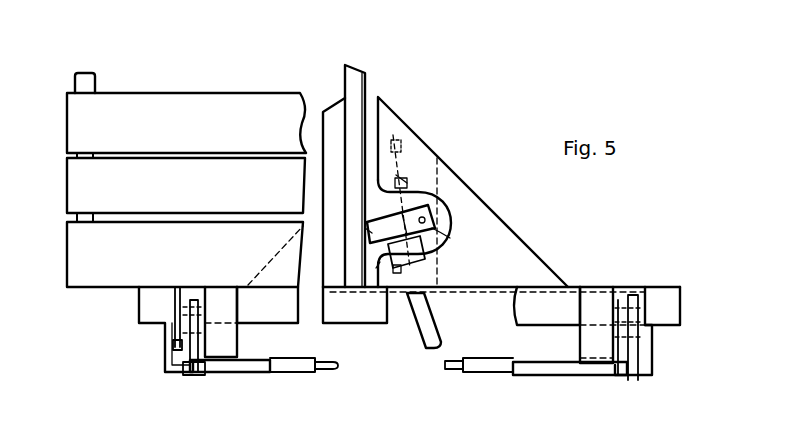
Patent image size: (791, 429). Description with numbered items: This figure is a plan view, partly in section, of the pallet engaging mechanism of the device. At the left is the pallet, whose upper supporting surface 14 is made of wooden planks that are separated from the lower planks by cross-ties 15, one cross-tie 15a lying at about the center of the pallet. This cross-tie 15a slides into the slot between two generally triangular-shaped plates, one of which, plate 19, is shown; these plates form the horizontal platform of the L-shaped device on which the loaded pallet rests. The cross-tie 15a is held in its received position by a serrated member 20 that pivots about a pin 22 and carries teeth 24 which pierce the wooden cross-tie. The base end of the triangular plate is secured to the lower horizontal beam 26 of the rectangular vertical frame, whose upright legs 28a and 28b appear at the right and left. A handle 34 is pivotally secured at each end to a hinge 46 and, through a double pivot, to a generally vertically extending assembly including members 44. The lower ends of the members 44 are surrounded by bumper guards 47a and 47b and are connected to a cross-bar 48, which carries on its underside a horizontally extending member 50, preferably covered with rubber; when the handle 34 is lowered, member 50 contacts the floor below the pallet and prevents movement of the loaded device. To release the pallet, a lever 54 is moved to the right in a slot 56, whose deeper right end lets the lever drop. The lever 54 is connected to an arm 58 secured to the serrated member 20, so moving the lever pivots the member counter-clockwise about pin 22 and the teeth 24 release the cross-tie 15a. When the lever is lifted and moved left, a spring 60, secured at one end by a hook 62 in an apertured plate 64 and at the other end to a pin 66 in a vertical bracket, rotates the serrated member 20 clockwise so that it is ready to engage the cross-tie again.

The upper supporting surface 14 is at (188, 100).
The cross-ties 15 is at (87, 70).
The cross-tie 15a is at (356, 73).
The triangular-shaped plate 19 is at (453, 187).
The serrated member 20 is at (401, 229).
The pin 22 is at (430, 211).
The teeth 24 is at (365, 228).
The lower horizontal beam 26 is at (260, 315).
The upright leg 28a is at (665, 296).
The upright leg 28b is at (148, 311).
The handle 34 is at (260, 375).
The members 44 is at (197, 372).
The hinge 46 is at (185, 375).
The bumper guard 47a is at (595, 282).
The bumper guard 47b is at (213, 285).
The cross-bar 48 is at (300, 372).
The horizontally extending member 50 is at (333, 372).
The lever 54 is at (430, 320).
The slot 56 is at (452, 287).
The arm 58 is at (376, 268).
The spring 60 is at (407, 183).
The hook 62 is at (402, 150).
The apertured plate 64 is at (396, 130).
The pin 66 is at (450, 238).